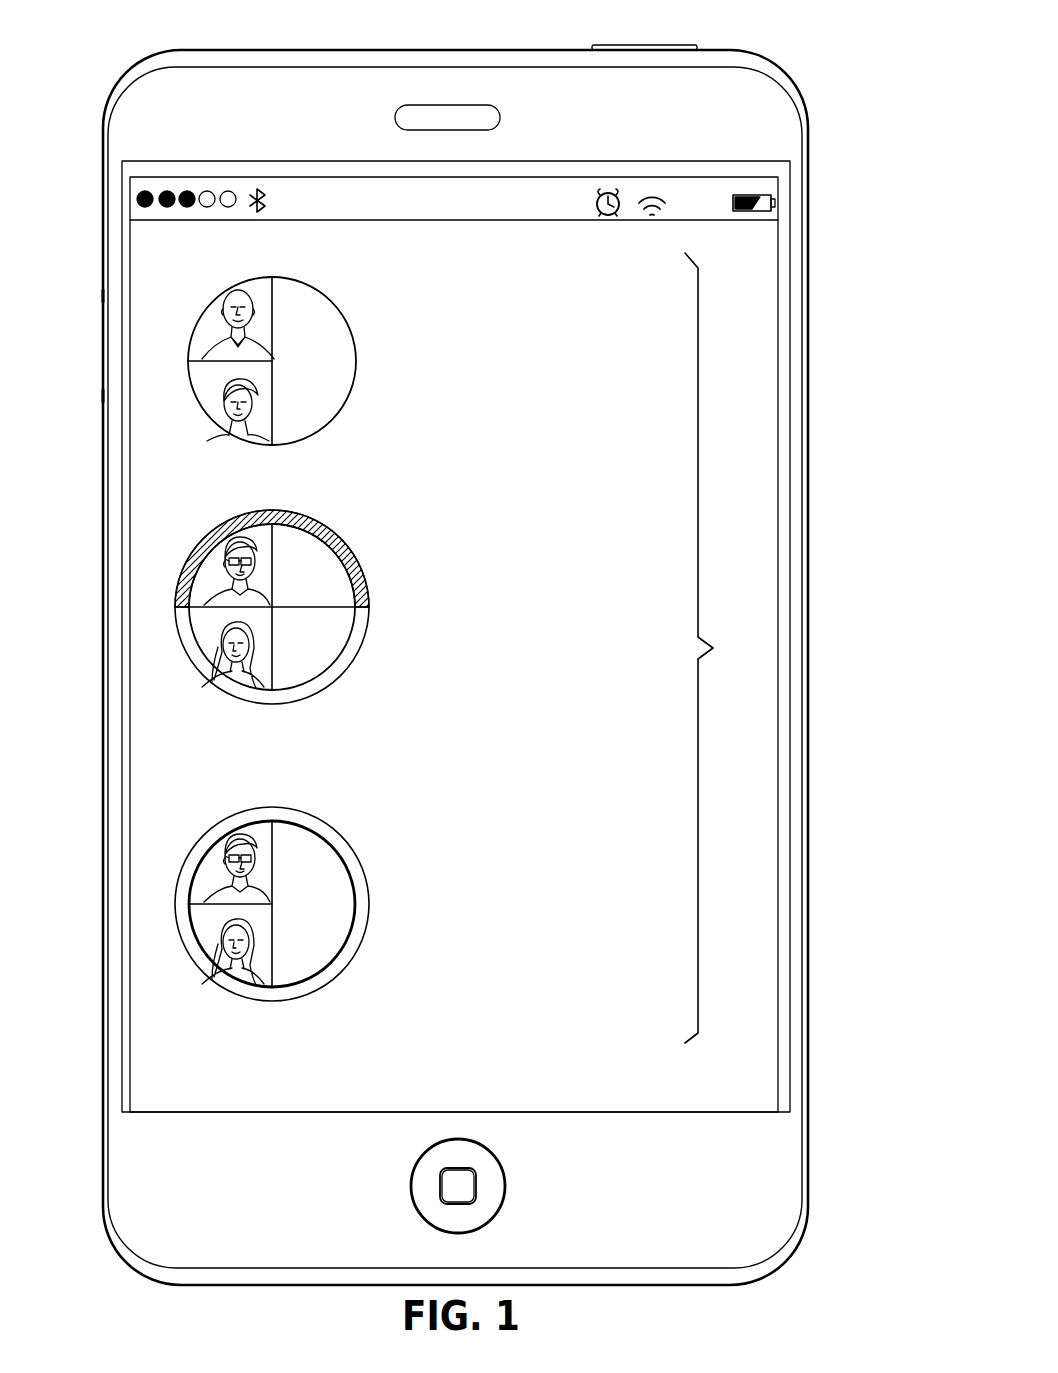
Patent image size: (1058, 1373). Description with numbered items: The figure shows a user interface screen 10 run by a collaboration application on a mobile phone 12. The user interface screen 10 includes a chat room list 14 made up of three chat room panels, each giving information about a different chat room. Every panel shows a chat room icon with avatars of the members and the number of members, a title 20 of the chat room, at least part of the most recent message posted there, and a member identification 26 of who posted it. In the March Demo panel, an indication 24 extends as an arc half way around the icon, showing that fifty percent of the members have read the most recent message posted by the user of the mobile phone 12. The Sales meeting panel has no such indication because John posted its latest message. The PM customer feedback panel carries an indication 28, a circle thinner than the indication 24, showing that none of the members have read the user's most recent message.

The user interface screen 10 is at (142, 229).
The mobile phone 12 is at (683, 46).
The chat room list 14 is at (718, 648).
The title 20 is at (505, 305).
The indication 24 is at (272, 554).
The member identification 26 is at (432, 410).
The indication 28 is at (328, 984).